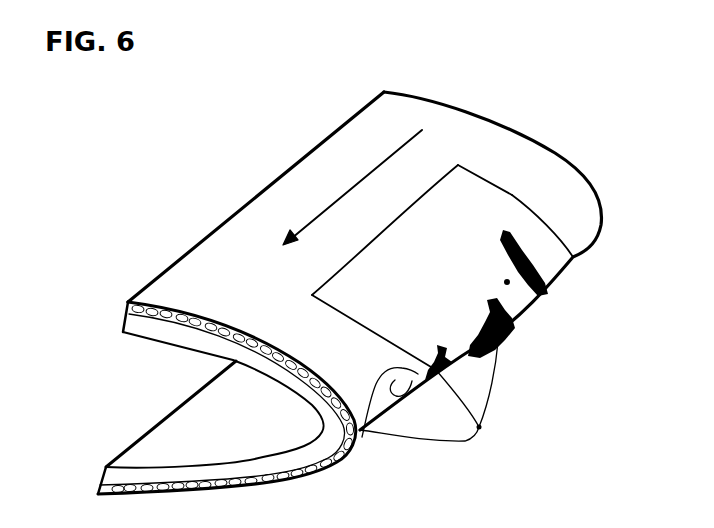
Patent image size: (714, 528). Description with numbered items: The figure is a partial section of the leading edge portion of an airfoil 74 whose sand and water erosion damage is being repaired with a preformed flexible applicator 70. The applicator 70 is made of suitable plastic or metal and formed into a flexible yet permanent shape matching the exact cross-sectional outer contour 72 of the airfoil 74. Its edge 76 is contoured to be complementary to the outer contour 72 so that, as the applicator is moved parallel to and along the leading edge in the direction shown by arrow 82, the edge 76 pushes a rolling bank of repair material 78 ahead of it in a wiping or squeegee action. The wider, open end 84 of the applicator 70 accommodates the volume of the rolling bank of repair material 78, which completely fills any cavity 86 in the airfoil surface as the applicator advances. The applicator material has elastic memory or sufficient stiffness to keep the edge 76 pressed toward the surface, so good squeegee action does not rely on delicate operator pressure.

The flexible applicator 70 is at (408, 439).
The outer contour 72 is at (487, 108).
The airfoil 74 is at (100, 295).
The edge 76 is at (512, 195).
The repair material 78 is at (500, 356).
The arrow 82 is at (373, 166).
The open end 84 is at (453, 443).
The cavity 86 is at (362, 437).